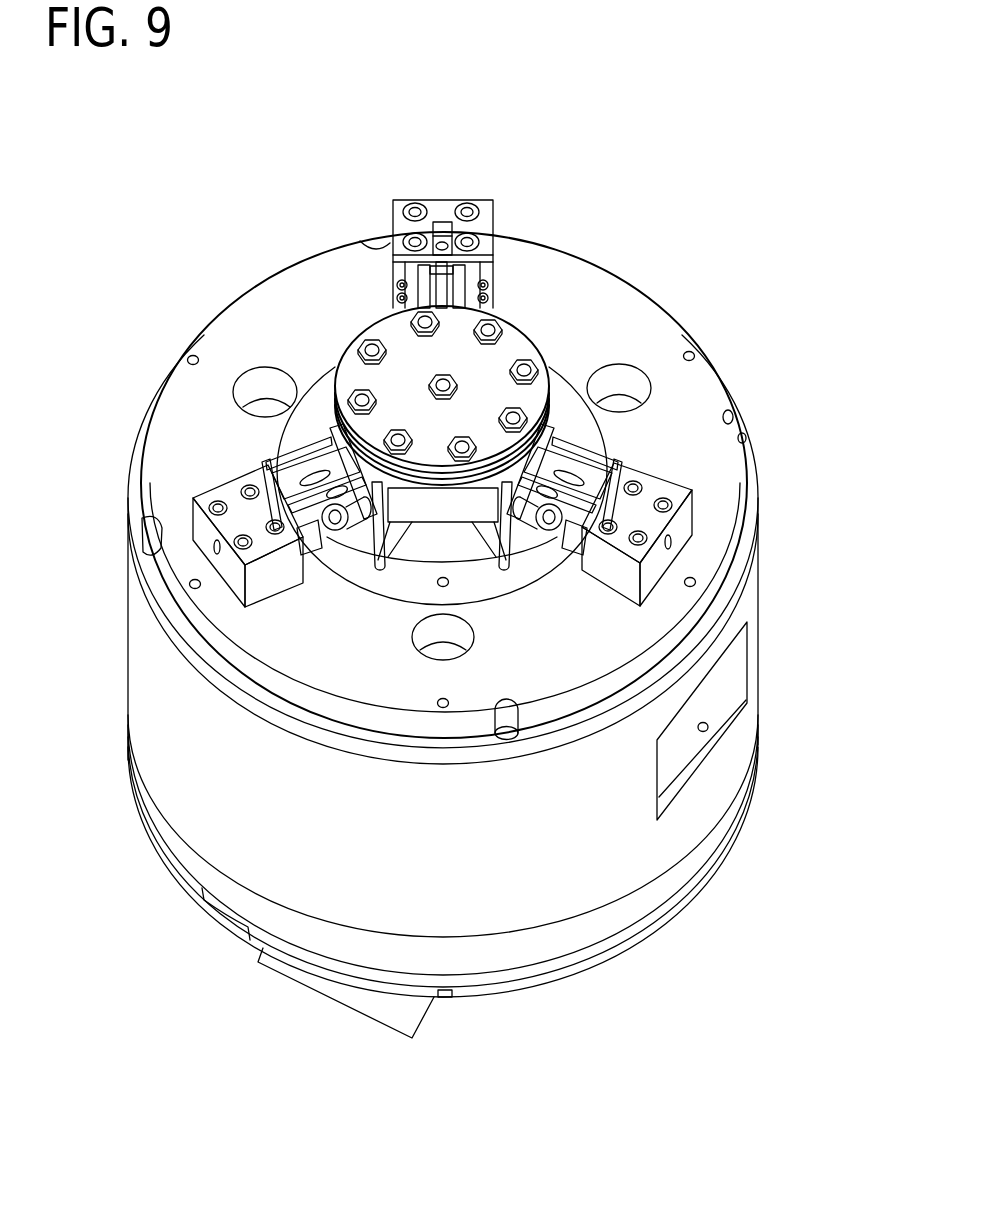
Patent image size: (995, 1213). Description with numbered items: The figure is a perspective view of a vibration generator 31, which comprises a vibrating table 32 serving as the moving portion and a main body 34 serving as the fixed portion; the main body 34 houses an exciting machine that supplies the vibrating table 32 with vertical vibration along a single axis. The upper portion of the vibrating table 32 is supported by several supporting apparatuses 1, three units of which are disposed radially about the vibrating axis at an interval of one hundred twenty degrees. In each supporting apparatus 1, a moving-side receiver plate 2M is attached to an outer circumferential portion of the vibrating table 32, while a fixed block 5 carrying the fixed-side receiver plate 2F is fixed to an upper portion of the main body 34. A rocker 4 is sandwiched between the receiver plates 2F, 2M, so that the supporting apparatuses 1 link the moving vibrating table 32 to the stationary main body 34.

The supporting apparatus 1 is at (447, 194).
The vibration generator 31 is at (558, 222).
The vibrating table 32 is at (500, 350).
The main body 34 is at (274, 295).
The moving-side receiver plate 2M is at (600, 457).
The fixed-side receiver plate 2F is at (620, 465).
The rocker 4 is at (618, 433).
The fixed block 5 is at (680, 535).